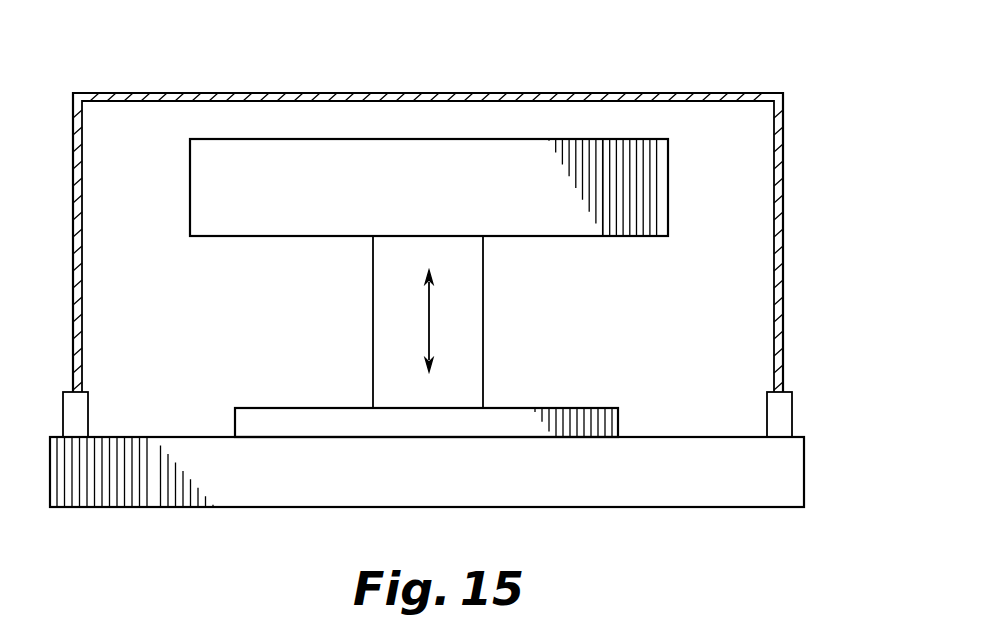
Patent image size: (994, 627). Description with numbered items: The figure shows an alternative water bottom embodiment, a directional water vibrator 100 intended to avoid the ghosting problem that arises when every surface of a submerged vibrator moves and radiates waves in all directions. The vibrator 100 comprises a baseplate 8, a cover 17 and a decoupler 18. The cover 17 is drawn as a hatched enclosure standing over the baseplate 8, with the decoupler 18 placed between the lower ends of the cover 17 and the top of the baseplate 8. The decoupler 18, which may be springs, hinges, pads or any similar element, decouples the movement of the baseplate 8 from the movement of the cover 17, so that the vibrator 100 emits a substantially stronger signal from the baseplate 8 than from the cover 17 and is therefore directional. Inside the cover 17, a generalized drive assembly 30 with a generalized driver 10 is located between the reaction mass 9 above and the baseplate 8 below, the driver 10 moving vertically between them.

The directional water vibrator 100 is at (730, 50).
The cover 17 is at (784, 254).
The decoupler 18 is at (793, 418).
The baseplate 8 is at (805, 475).
The reaction mass 9 is at (669, 180).
The driver 10 is at (477, 299).
The drive assembly 30 is at (276, 374).